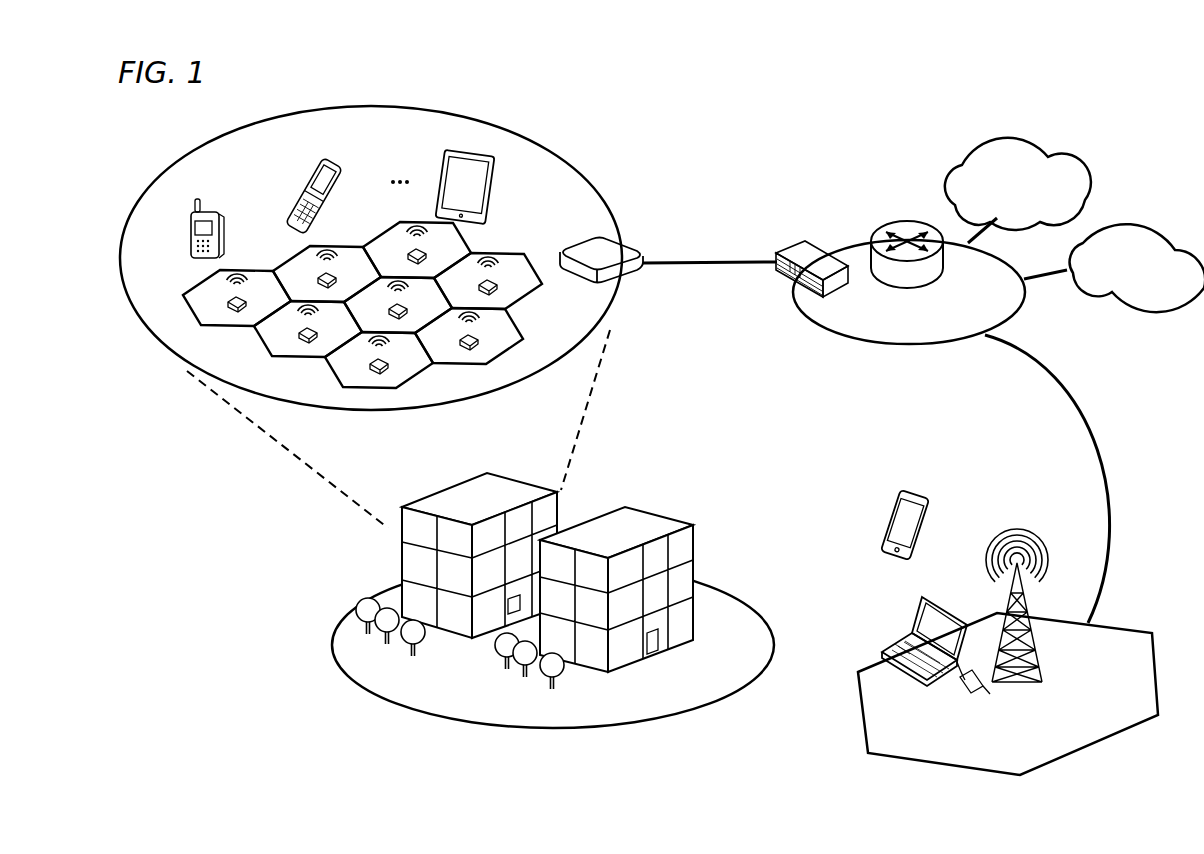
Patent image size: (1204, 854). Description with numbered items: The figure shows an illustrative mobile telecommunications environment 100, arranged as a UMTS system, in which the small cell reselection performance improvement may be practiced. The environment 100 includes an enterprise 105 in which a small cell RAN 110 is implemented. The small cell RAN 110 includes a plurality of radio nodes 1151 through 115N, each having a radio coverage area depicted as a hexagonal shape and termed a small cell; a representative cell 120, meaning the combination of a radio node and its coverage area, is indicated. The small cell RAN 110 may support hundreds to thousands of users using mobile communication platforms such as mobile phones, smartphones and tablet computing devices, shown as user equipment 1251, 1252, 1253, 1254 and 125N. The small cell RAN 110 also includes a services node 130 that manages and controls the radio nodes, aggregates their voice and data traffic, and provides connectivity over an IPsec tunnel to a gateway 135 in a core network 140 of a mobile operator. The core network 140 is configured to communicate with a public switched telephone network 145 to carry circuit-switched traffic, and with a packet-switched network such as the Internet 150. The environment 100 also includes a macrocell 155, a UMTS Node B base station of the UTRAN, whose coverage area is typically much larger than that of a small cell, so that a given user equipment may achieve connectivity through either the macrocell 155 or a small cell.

The mobile telecommunications environment 100 is at (736, 144).
The enterprise 105 is at (331, 631).
The small cell RAN 110 is at (546, 150).
The radio node 115N is at (500, 287).
The radio node 1151 is at (480, 345).
The cell 120 is at (507, 265).
The user equipment 1251 is at (889, 498).
The user equipment 1252 is at (915, 609).
The user equipment 1253 is at (222, 222).
The user equipment 1254 is at (323, 208).
The user equipment 125N is at (492, 177).
The services node 130 is at (628, 246).
The gateway 135 is at (803, 243).
The core network 140 is at (877, 345).
The public switched telephone network 145 is at (1156, 226).
The Internet 150 is at (990, 139).
The macrocell 155 is at (1138, 632).